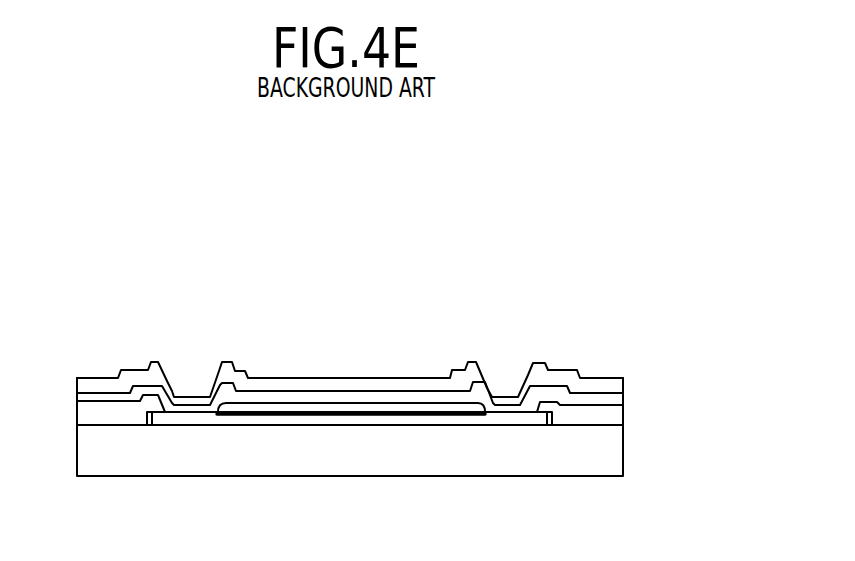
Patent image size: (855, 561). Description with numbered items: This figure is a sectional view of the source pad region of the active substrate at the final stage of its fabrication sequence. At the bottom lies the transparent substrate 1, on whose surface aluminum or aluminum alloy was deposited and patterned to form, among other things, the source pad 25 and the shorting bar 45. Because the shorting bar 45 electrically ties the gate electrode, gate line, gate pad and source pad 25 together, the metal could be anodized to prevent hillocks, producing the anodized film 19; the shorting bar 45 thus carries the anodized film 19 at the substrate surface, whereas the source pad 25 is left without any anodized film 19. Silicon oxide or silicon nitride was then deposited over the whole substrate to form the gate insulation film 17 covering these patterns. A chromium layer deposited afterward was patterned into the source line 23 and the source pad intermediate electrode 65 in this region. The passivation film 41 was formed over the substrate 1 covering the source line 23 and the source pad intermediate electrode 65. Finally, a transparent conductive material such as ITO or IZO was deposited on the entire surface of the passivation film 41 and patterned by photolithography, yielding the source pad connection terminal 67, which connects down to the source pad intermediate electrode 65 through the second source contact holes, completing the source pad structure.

The transparent substrate 1 is at (614, 447).
The gate insulation film 17 is at (103, 415).
The anodized film 19 is at (365, 417).
The source line 23 is at (99, 396).
The source pad 25 is at (187, 420).
The passivation film 41 is at (135, 380).
The shorting bar 45 is at (325, 420).
The source pad intermediate electrode 65 is at (193, 400).
The source pad connection terminal 67 is at (183, 391).